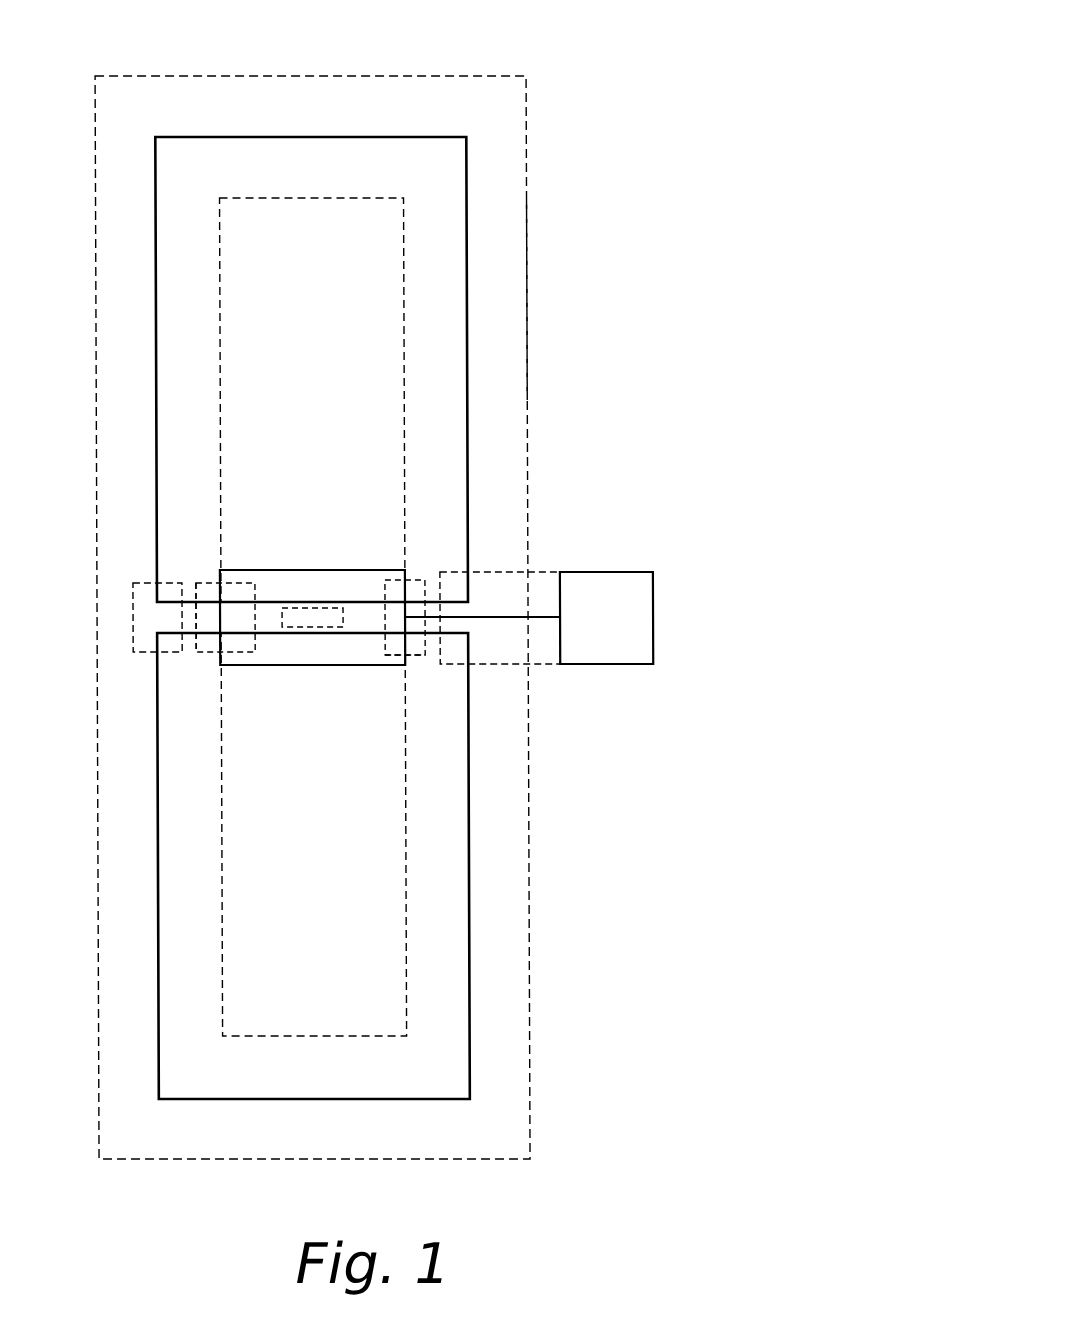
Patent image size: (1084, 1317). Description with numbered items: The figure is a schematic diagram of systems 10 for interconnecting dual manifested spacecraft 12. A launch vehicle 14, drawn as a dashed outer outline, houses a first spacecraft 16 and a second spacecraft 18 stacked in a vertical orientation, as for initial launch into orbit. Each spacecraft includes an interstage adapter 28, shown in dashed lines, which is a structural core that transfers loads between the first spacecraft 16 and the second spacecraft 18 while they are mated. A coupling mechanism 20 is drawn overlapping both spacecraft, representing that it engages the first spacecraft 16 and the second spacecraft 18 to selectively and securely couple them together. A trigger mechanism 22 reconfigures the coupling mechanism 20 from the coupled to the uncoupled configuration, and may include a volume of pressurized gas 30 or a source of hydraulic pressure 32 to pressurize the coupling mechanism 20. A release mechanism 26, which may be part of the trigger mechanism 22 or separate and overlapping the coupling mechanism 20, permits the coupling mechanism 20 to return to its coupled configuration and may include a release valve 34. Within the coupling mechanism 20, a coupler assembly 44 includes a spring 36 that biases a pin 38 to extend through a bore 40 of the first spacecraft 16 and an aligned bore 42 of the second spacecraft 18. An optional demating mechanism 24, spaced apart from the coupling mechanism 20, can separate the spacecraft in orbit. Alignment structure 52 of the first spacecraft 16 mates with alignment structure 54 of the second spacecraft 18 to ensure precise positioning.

The system for interconnecting dual manifested spacecraft 10 is at (677, 53).
The dual manifested spacecraft 12 is at (554, 81).
The launch vehicle 14 is at (526, 283).
The first spacecraft 16 is at (468, 918).
The second spacecraft 18 is at (467, 407).
The coupling mechanism 20 is at (258, 570).
The trigger mechanism 22 is at (482, 572).
The demating mechanism 24 is at (133, 585).
The release mechanism 26 is at (205, 583).
The interstage adapter 28 is at (220, 322).
The volume of pressurized gas 30 is at (643, 598).
The source of hydraulic pressure 32 is at (643, 640).
The release valve 34 is at (205, 623).
The spring 36 is at (308, 622).
The pin 38 is at (330, 628).
The bore 40 is at (307, 657).
The bore 42 is at (330, 585).
The coupler assembly 44 is at (282, 622).
The alignment structure 52 is at (417, 658).
The alignment structure 54 is at (417, 580).